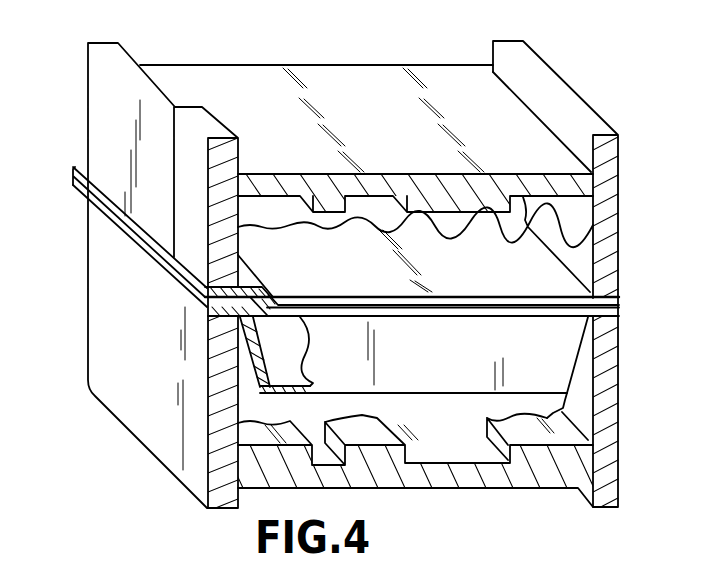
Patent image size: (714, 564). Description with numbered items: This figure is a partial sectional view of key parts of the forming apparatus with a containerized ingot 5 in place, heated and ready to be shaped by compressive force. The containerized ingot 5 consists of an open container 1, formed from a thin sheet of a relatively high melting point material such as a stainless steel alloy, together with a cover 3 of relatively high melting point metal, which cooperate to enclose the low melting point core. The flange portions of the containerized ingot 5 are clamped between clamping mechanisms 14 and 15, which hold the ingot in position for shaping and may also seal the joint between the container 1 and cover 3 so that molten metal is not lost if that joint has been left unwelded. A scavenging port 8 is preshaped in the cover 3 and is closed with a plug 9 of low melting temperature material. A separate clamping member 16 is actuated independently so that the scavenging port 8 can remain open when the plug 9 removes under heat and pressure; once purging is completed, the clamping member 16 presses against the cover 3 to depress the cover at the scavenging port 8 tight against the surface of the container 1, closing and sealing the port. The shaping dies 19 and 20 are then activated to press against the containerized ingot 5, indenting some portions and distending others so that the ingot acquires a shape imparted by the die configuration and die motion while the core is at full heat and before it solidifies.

The container 1 is at (550, 371).
The cover 3 is at (453, 278).
The containerized ingot 5 is at (520, 356).
The scavenging port 8 is at (323, 241).
The plug 9 is at (195, 289).
The clamping mechanism 14 is at (613, 198).
The clamping mechanism 15 is at (612, 476).
The clamping member 16 is at (232, 127).
The shaping die 19 is at (457, 78).
The shaping die 20 is at (543, 467).